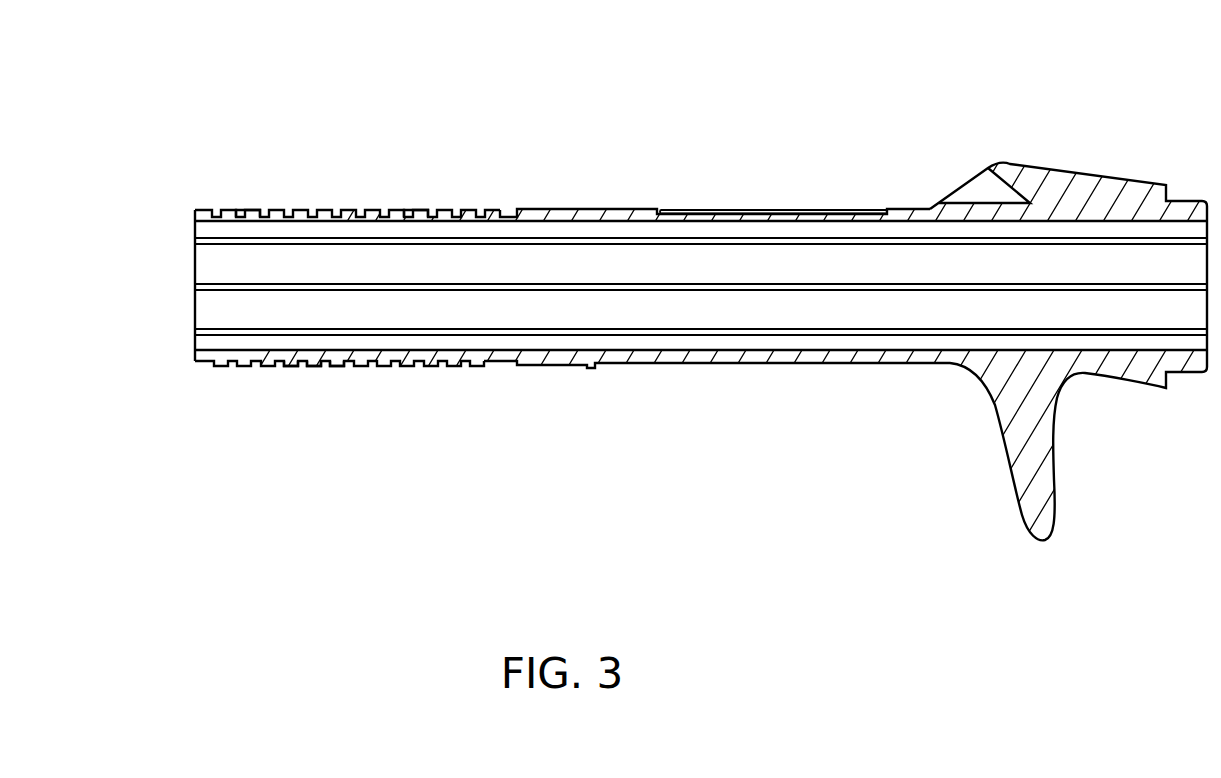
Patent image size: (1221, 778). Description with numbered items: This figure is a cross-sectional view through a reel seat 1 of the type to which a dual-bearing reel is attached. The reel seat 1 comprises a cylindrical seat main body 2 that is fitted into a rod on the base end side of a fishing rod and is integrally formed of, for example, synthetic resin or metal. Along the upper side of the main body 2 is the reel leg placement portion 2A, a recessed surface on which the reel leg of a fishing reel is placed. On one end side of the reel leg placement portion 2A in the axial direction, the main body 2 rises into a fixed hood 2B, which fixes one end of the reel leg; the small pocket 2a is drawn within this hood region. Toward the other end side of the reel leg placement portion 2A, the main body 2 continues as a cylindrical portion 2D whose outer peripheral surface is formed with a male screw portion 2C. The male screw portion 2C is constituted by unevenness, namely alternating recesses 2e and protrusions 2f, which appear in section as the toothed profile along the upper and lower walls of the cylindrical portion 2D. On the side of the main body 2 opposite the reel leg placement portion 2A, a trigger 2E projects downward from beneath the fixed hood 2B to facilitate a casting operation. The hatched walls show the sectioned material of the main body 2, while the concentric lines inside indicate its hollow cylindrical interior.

The reel seat 1 is at (947, 108).
The seat main body 2 is at (826, 209).
The reel leg placement portion 2A is at (736, 212).
The fixed hood 2B is at (1082, 208).
The male screw portion 2C is at (311, 211).
The cylindrical portion 2D is at (255, 364).
The trigger 2E is at (1040, 457).
The notch 2a is at (977, 183).
The recess 2e is at (243, 210).
The protrusion 2f is at (338, 368).